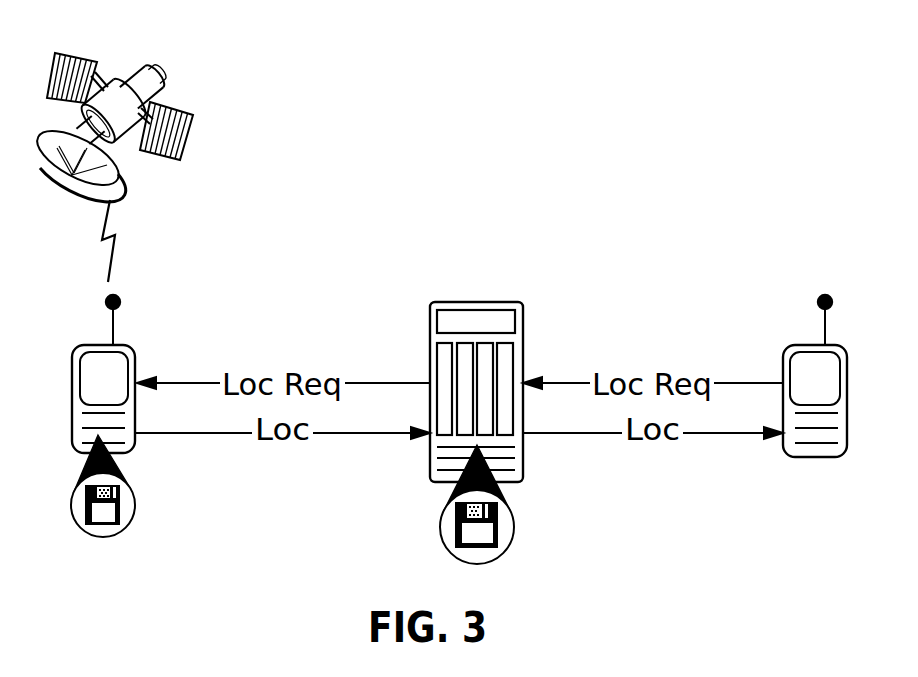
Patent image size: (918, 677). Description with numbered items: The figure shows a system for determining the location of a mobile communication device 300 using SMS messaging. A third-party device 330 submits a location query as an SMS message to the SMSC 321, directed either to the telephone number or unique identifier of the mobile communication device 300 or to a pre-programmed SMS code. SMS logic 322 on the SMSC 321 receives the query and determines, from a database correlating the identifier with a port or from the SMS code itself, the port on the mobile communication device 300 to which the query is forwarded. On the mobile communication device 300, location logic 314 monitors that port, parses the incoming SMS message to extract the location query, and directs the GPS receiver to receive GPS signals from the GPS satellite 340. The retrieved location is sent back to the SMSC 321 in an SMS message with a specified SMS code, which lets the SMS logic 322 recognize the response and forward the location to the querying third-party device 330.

The mobile communication device 300 is at (72, 367).
The location logic 314 is at (75, 508).
The SMSC 321 is at (418, 370).
The SMS logic 322 is at (516, 508).
The third-party device 330 is at (775, 353).
The GPS satellite 340 is at (144, 113).